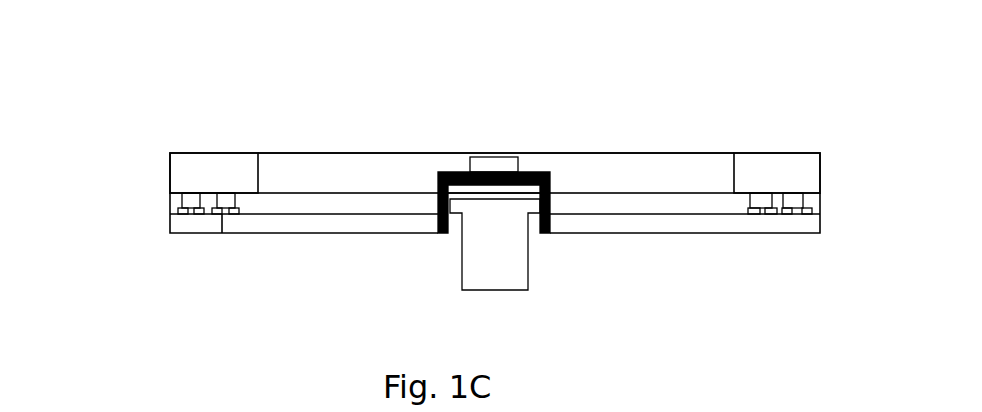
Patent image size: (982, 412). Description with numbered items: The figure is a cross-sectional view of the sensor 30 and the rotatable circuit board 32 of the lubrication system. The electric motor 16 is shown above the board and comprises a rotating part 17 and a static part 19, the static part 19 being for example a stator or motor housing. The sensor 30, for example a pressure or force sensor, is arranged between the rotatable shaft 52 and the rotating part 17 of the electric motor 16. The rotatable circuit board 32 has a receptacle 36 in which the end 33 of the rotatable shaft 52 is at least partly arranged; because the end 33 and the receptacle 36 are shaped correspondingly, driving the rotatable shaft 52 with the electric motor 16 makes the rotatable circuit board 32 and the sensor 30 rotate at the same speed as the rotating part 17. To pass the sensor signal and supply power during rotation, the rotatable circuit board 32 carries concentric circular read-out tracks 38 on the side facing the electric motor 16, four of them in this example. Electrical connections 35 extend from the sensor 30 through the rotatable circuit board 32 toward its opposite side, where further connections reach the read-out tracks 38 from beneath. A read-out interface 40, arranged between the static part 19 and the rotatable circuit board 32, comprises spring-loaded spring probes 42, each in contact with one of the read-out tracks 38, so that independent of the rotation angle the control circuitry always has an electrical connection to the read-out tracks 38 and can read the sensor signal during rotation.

The electric motor 16 is at (293, 148).
The rotating part 17 is at (372, 148).
The static part 19 is at (217, 149).
The sensor 30 is at (495, 150).
The rotatable circuit board 32 is at (164, 242).
The end of the rotatable shaft 33 is at (544, 175).
The electrical connections 35 is at (432, 229).
The receptacle 36 is at (537, 231).
The read-out tracks 38 is at (232, 220).
The read-out interface 40 is at (178, 202).
The spring probes 42 is at (200, 210).
The rotatable shaft 52 is at (510, 262).